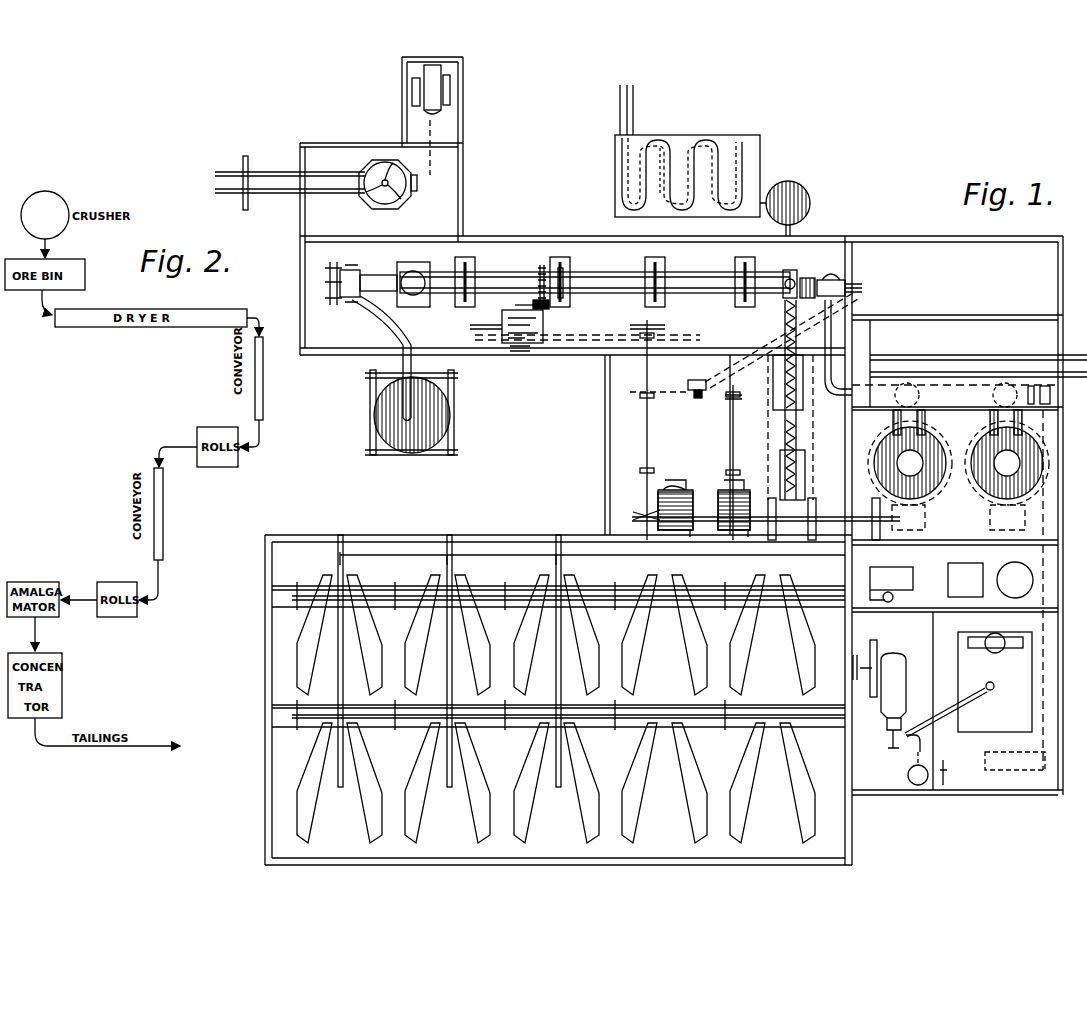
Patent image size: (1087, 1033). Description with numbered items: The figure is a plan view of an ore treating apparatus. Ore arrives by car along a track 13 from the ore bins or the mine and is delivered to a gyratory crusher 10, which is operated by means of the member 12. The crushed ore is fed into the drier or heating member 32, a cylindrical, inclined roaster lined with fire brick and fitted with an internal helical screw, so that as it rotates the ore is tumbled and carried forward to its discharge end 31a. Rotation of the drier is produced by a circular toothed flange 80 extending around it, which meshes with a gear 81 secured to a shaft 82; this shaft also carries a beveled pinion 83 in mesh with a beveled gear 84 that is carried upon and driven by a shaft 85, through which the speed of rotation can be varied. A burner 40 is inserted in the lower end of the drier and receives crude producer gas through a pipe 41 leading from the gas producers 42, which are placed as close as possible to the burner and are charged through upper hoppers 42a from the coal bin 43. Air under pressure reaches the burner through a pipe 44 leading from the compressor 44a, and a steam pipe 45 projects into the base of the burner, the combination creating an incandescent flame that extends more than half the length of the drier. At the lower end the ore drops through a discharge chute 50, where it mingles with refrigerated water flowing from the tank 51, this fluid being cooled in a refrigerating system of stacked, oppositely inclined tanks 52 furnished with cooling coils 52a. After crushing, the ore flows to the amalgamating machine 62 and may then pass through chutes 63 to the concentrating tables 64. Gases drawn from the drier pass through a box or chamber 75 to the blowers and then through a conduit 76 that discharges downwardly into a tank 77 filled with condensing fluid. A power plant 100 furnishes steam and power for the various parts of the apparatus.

The crusher 10 is at (417, 188).
The operating member 12 is at (450, 78).
The track 13 is at (273, 175).
The discharge end of drier 31a is at (798, 275).
The drier or heating member 32 is at (500, 280).
The burner 40 is at (810, 288).
The gas pipe or conduit 41 is at (860, 292).
The gas producers 42 is at (980, 492).
The upper hoppers 42a is at (1002, 460).
The coal bin 43 is at (955, 325).
The air pipe 44 is at (755, 355).
The compressor 44a is at (698, 380).
The steam pipe 45 is at (845, 300).
The discharge chute 50 is at (785, 300).
The collection tank 51 is at (798, 185).
The refrigerating tanks 52 is at (740, 140).
The cooling coils 52a is at (668, 142).
The amalgamating machine 62 is at (728, 490).
The chutes 63 is at (595, 560).
The concentrating tables 64 is at (545, 575).
The box or chamber 75 is at (430, 270).
The conduit or duct 76 is at (400, 362).
The condensing tank 77 is at (395, 445).
The circular toothed flange 80 is at (543, 300).
The gear 81 is at (562, 300).
The shaft 82 is at (548, 307).
The beveled pinion 83 is at (504, 308).
The beveled gear 84 is at (545, 312).
The shaft 85 is at (533, 335).
The power plant 100 is at (958, 745).